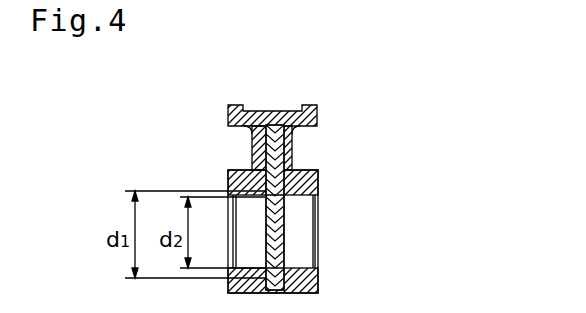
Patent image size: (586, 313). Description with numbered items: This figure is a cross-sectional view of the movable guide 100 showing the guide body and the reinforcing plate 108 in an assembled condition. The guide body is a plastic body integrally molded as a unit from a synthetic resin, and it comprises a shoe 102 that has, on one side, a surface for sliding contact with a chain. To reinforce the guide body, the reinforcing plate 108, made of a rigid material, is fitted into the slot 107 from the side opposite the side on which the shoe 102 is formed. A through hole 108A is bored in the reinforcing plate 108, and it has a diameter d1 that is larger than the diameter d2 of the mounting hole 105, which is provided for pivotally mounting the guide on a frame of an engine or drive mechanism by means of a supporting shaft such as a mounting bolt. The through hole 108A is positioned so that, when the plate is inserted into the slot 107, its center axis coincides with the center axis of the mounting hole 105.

The movable guide 100 is at (380, 66).
The shoe 102 is at (317, 117).
The mounting hole 105 is at (299, 268).
The slot 107 is at (262, 142).
The reinforcing plate 108 is at (285, 140).
The through hole 108A is at (280, 195).